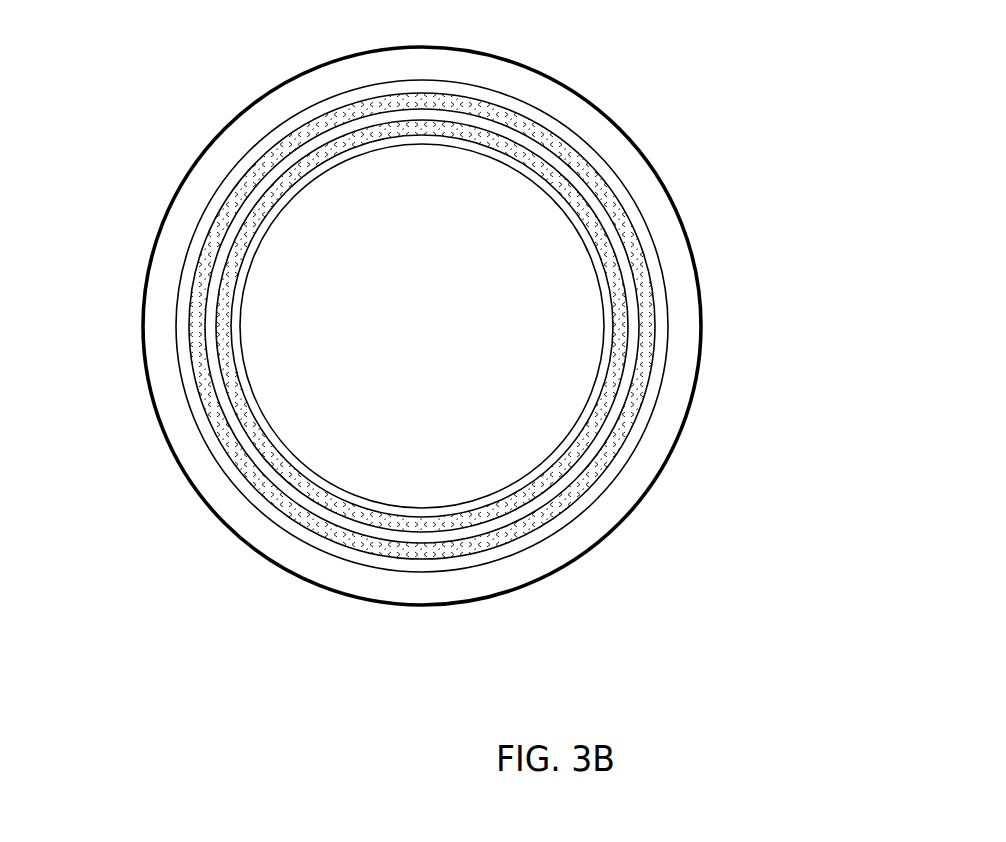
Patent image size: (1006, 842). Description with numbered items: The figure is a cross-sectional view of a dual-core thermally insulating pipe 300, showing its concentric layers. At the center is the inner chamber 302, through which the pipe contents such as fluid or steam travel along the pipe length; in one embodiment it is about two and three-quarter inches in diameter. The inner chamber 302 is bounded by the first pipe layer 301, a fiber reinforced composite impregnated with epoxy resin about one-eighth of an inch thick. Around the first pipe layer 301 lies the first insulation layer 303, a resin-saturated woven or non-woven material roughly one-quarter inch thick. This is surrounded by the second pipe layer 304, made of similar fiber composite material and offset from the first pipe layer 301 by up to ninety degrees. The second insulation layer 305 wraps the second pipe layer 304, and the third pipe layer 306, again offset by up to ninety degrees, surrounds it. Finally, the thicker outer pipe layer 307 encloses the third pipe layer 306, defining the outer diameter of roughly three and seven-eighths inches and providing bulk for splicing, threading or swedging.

The insulating pipe 300 is at (537, 356).
The first pipe layer 301 is at (543, 184).
The inner chamber 302 is at (518, 279).
The first insulation layer 303 is at (620, 353).
The second pipe layer 304 is at (622, 401).
The second insulation layer 305 is at (603, 463).
The third pipe layer 306 is at (556, 524).
The outer pipe layer 307 is at (515, 356).